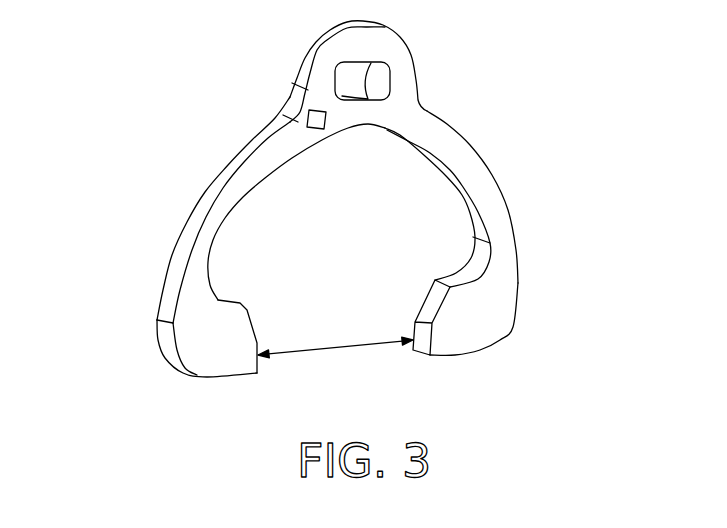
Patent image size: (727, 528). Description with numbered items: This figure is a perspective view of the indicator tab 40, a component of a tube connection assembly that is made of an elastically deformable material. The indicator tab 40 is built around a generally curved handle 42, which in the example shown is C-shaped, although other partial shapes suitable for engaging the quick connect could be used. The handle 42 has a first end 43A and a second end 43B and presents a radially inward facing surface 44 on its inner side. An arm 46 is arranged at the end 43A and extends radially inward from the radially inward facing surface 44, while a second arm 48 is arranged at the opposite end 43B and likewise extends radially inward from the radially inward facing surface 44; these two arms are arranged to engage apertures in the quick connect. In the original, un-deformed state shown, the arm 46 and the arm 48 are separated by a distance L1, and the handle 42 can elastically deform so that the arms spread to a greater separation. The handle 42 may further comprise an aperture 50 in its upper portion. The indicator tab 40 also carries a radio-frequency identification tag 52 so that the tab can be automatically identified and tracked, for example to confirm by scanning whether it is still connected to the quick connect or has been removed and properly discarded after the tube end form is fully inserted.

The indicator tab 40 is at (333, 220).
The handle 42 is at (384, 65).
The end 43A is at (142, 333).
The end 43B is at (510, 246).
The radially inward facing surface 44 is at (487, 220).
The arm 46 is at (222, 360).
The arm 48 is at (465, 338).
The aperture 50 is at (366, 78).
The radio-frequency identification (RFID) tag 52 is at (307, 118).
The distance L1 is at (343, 350).